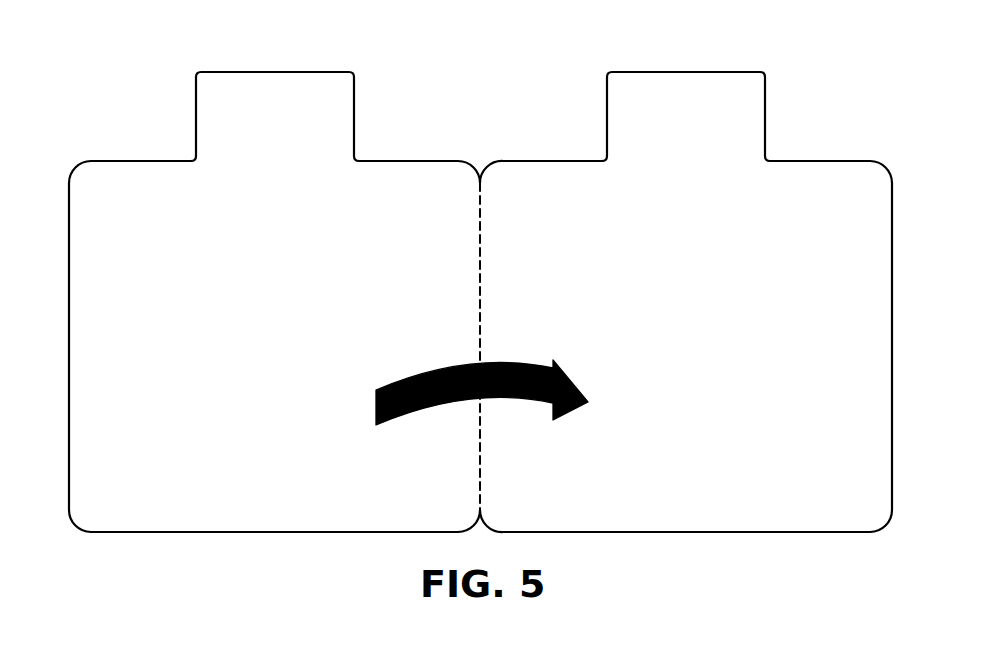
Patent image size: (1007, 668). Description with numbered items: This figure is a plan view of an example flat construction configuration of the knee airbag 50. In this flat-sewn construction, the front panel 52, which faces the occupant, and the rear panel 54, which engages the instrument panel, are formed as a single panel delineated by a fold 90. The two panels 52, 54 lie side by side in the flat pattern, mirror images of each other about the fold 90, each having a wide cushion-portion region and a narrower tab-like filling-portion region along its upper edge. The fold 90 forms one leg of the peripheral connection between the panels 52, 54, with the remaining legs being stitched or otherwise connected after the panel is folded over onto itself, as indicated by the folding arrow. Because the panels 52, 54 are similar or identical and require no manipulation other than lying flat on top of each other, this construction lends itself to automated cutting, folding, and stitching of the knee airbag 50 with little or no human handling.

The knee airbag 50 is at (491, 311).
The front panel 52 is at (256, 326).
The rear panel 54 is at (715, 323).
The fold 90 is at (482, 333).